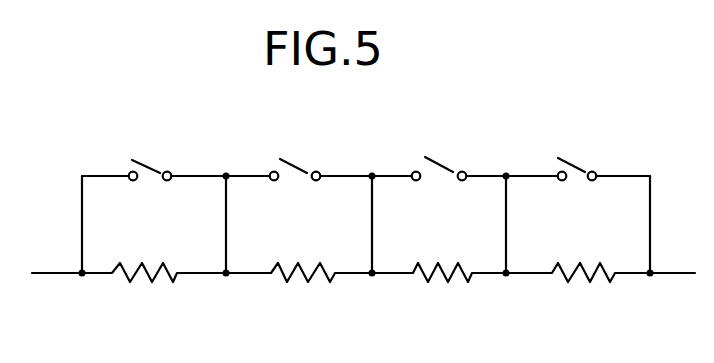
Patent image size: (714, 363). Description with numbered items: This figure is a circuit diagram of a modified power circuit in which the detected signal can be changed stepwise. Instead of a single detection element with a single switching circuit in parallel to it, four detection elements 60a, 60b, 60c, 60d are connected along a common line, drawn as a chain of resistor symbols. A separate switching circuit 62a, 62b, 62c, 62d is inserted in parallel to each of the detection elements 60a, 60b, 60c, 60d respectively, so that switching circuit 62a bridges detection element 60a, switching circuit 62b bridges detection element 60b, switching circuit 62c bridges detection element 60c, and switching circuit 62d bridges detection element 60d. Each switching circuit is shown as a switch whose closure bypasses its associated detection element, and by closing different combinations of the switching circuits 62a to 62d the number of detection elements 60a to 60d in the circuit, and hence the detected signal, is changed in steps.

The detection element 60a is at (152, 283).
The detection element 60b is at (287, 284).
The detection element 60c is at (428, 283).
The detection element 60d is at (570, 285).
The switching circuit 62a is at (157, 162).
The switching circuit 62b is at (300, 163).
The switching circuit 62c is at (440, 160).
The switching circuit 62d is at (571, 160).